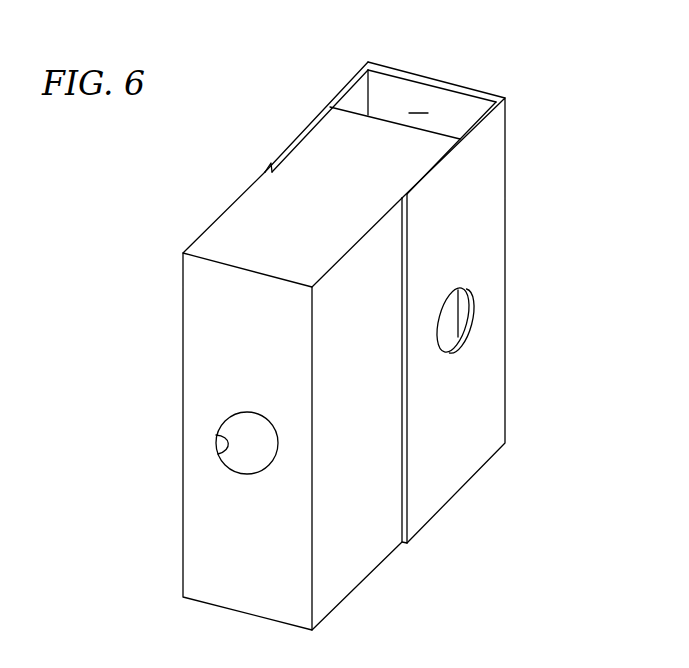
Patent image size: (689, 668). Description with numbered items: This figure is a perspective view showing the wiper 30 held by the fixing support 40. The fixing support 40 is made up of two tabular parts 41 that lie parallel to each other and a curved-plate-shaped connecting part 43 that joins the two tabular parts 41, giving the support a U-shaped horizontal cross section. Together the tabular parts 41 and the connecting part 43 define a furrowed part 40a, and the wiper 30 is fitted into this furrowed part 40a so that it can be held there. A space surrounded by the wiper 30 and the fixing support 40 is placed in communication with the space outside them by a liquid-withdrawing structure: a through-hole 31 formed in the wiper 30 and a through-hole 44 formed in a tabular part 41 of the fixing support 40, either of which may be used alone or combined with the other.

The wiper 30 is at (202, 230).
The through-hole 31 is at (218, 452).
The fixing support 40 is at (372, 277).
The furrowed part 40a is at (265, 170).
The tabular part 41 is at (304, 127).
The curved-plate-shaped connecting part 43 is at (461, 85).
The through-hole 44 is at (467, 291).